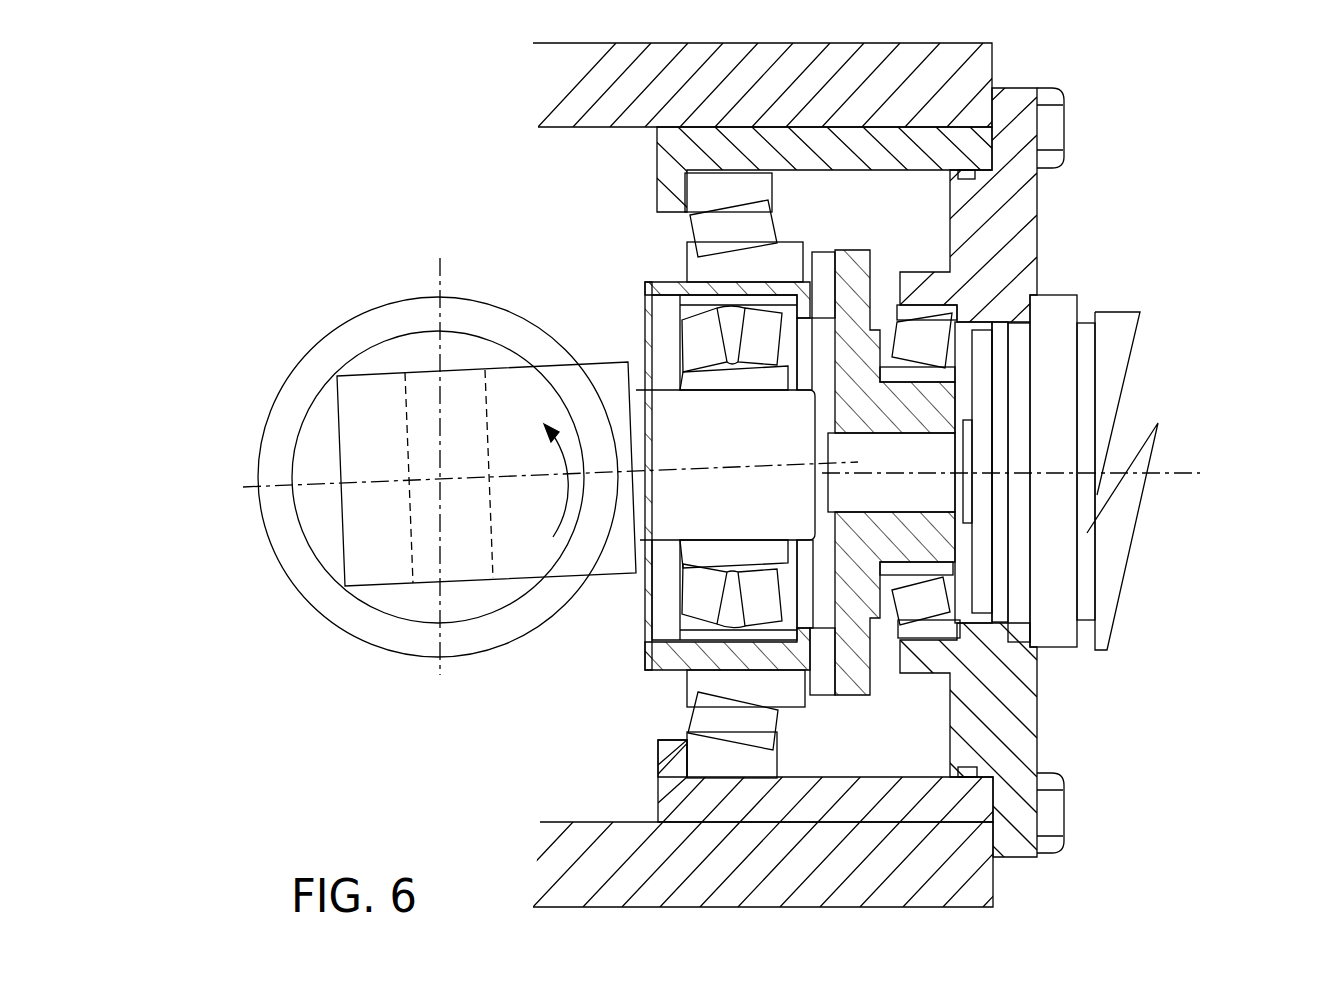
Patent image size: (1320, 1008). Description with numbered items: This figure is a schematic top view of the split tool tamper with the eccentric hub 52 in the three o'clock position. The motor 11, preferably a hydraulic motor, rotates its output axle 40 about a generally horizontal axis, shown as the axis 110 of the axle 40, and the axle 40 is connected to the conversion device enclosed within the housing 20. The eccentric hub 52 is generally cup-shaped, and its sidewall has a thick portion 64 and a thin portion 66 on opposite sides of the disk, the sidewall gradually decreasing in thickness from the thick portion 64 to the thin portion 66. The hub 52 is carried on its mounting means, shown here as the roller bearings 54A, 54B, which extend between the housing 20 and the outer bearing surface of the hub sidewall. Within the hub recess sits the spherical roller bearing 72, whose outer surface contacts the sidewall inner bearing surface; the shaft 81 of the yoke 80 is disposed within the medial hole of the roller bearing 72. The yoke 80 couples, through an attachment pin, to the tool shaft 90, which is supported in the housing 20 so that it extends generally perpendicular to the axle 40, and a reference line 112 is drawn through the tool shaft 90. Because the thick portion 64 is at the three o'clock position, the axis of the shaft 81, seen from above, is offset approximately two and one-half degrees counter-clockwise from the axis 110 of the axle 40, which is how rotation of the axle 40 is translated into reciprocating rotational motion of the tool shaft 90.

The housing 20 is at (955, 62).
The rotating output axle 40 is at (930, 453).
The yoke 80 is at (598, 402).
The shaft 81 is at (682, 425).
The tool shaft 90 is at (390, 635).
The rotor axis 112 is at (440, 281).
The shaft axis 110 is at (1185, 474).
The motor 11 is at (1117, 555).
The thin portion 66 is at (645, 283).
The thick portion 64 is at (660, 665).
The spherical roller bearing 72 is at (698, 340).
The roller bearing 54A is at (705, 237).
The roller bearing 54B is at (928, 610).
The eccentric hub 52 is at (667, 658).